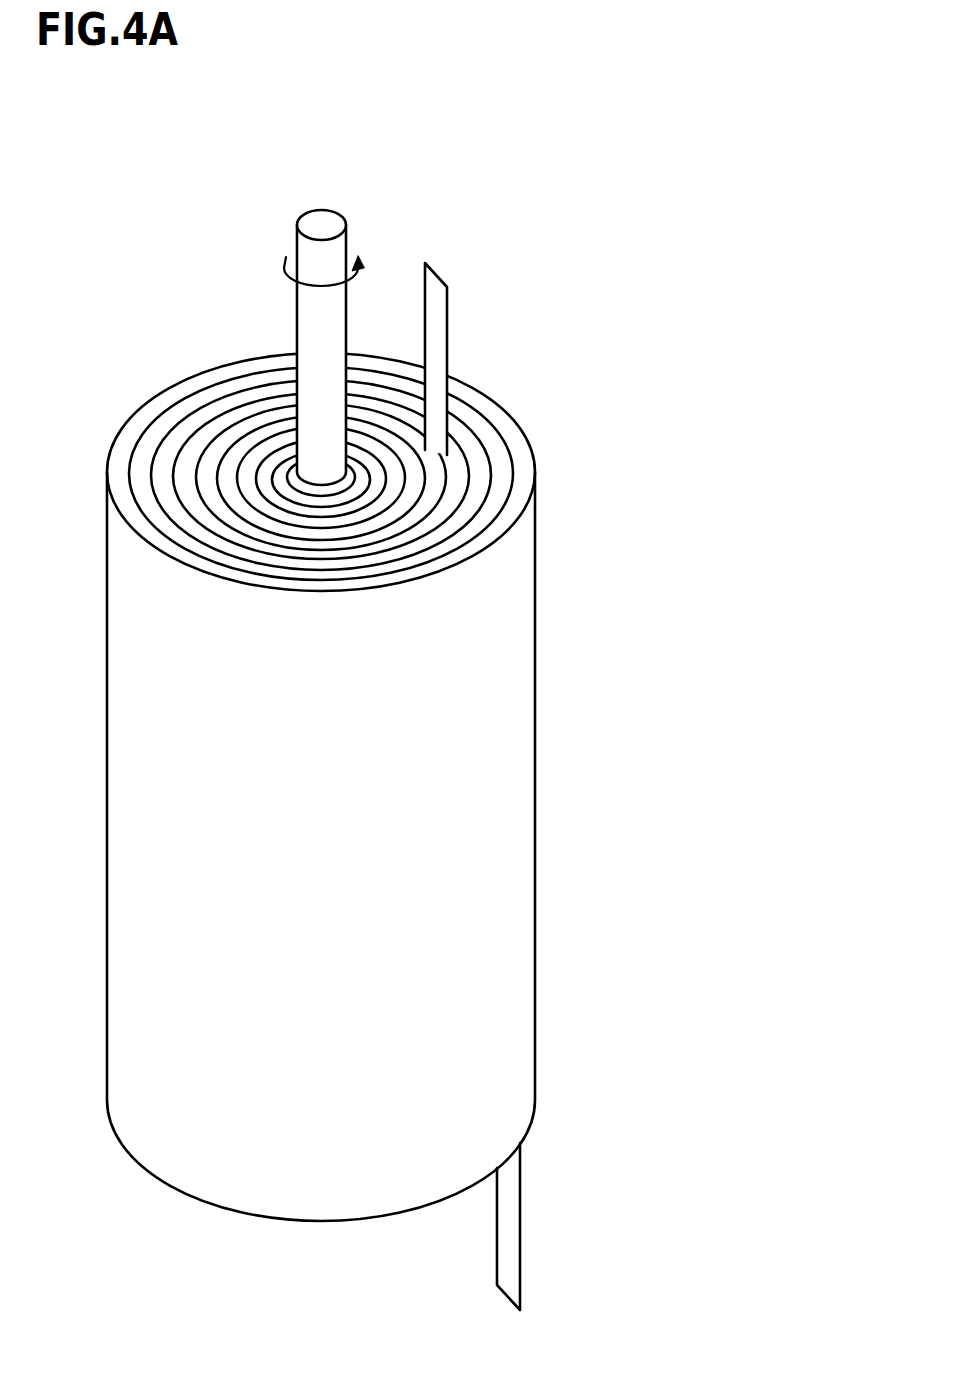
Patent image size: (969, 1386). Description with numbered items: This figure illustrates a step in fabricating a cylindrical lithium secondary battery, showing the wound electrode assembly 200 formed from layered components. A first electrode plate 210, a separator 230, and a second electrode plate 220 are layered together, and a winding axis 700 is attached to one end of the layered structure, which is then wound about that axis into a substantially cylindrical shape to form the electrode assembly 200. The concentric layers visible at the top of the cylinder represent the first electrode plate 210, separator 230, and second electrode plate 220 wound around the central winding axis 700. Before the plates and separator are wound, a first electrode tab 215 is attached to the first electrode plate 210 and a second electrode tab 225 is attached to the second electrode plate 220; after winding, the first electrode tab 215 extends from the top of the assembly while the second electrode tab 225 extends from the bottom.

The electrode assembly 200 is at (467, 787).
The first electrode plate 210 is at (500, 436).
The first electrode tab 215 is at (435, 311).
The second electrode plate 220 is at (513, 511).
The second electrode tab 225 is at (503, 1220).
The separator 230 is at (500, 470).
The winding axis 700 is at (325, 221).